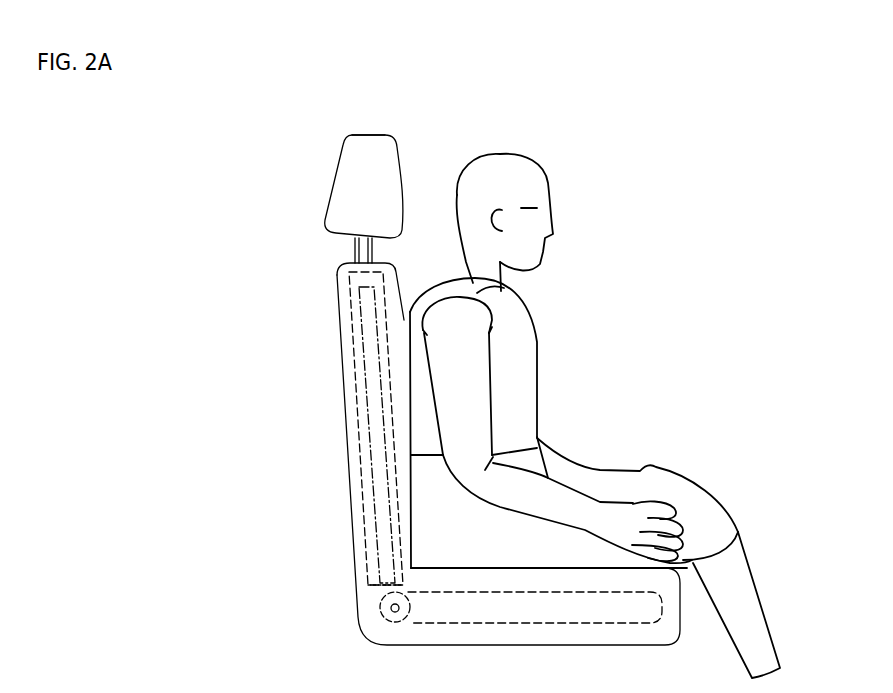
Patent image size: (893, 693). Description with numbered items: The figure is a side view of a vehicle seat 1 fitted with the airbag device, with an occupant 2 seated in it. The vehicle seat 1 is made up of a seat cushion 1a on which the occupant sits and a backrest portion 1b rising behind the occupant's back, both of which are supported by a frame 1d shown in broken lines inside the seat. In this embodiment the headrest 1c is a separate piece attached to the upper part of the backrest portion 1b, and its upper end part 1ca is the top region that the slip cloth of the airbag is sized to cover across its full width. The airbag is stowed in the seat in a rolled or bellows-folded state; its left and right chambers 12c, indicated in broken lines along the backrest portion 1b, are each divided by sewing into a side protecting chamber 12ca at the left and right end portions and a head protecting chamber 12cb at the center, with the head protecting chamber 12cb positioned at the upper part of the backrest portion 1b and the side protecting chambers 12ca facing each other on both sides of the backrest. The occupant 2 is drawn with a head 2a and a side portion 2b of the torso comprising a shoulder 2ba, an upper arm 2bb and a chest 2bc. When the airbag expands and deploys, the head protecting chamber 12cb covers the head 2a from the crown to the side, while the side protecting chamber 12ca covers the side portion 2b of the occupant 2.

The vehicle seat 1 is at (333, 499).
The seat cushion 1a is at (548, 632).
The backrest portion 1b is at (345, 451).
The headrest 1c is at (351, 164).
The upper end part of the headrest 1ca is at (372, 136).
The frame 1d is at (437, 612).
The chambers 12c is at (254, 320).
The side protecting chamber 12ca is at (352, 391).
The head protecting chamber 12cb is at (352, 282).
The occupant 2 is at (675, 185).
The head 2a is at (523, 172).
The side portion 2b is at (632, 262).
The shoulder 2ba is at (477, 293).
The upper arm 2bb is at (460, 375).
The chest 2bc is at (518, 338).